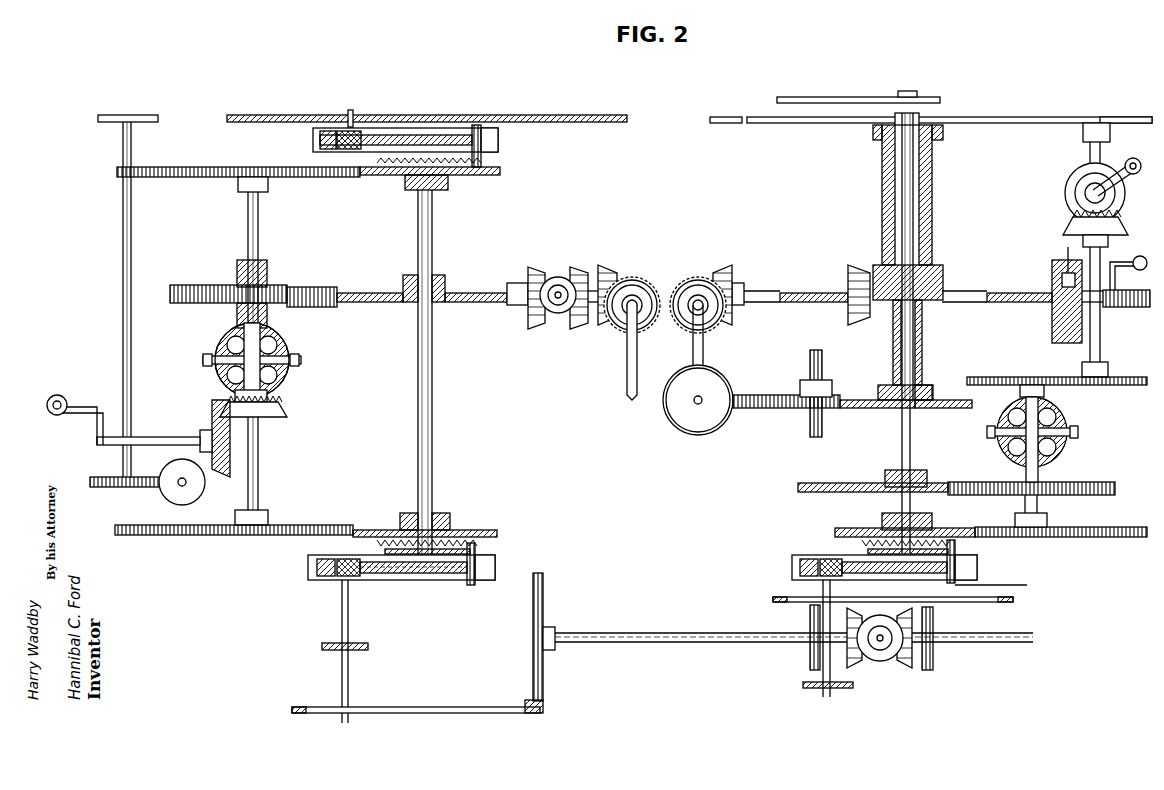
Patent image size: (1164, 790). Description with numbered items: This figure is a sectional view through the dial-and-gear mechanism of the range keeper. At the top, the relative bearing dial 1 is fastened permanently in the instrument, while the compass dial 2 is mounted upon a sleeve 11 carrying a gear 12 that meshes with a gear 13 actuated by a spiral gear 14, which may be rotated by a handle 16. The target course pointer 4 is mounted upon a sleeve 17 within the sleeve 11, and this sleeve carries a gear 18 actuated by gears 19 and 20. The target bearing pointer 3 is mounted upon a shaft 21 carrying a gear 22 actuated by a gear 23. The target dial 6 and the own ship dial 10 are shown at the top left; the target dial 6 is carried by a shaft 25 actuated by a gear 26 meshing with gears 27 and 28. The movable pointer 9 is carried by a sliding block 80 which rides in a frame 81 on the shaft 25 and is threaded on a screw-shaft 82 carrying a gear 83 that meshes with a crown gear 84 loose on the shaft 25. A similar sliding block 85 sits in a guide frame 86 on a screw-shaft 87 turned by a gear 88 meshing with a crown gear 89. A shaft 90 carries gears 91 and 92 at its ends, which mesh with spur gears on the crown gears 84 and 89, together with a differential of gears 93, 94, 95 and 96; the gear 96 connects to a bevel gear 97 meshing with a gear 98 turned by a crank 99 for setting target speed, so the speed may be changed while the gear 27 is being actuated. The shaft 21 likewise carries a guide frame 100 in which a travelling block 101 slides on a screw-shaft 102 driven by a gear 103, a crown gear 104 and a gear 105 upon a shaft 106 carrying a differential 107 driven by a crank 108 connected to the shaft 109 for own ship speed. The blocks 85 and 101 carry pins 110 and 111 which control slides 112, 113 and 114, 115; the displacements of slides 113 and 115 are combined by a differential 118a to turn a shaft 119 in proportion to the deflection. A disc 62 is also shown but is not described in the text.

The relative bearing dial 1 is at (730, 124).
The compass dial 2 is at (810, 124).
The target bearing pointer 3 is at (801, 97).
The target course pointer 4 is at (968, 116).
The target dial 6 is at (540, 114).
The movable pointer 9 is at (353, 111).
The own ship dial 10 is at (160, 115).
The sleeve 11 is at (933, 181).
The gear 12 is at (803, 303).
The gear 13 is at (1048, 290).
The spiral gear 14 is at (1054, 328).
The handle 16 is at (1141, 256).
The sleeve 17 is at (881, 222).
The gear 18 is at (946, 410).
The gear 19 is at (763, 409).
The gear 20 is at (701, 425).
The shaft 21 is at (901, 445).
The gear 22 is at (830, 492).
The gear 23 is at (1076, 482).
The shaft 25 is at (433, 241).
The gear 26 is at (378, 304).
The gear 27 is at (290, 287).
The gear 28 is at (237, 266).
The disc 62 is at (170, 500).
The sliding block 80 is at (376, 143).
The frame 81 is at (396, 128).
The screw-shaft 82 is at (438, 133).
The gear 83 is at (498, 129).
The crown gear 84 is at (482, 161).
The sliding block 85 is at (342, 552).
The guide frame 86 is at (450, 582).
The screw-shaft 87 is at (397, 576).
The gear 88 is at (474, 584).
The crown gear 89 is at (478, 542).
The shaft 90 is at (259, 212).
The gear 91 is at (189, 178).
The gear 92 is at (176, 536).
The gear 93 is at (270, 335).
The gear 94 is at (216, 371).
The gear 95 is at (290, 375).
The gear 96 is at (267, 394).
The bevel gear 97 is at (281, 410).
The gear 98 is at (221, 475).
The crank 99 is at (63, 395).
The guide frame 100 is at (978, 560).
The travelling block 101 is at (842, 559).
The screw-shaft 102 is at (793, 572).
The gear 103 is at (1018, 587).
The crown gear 104 is at (834, 537).
The gear 105 is at (1081, 537).
The shaft 106 is at (1038, 509).
The differential 107 is at (1052, 418).
The crank 108 is at (1133, 158).
The shaft 109 is at (1089, 147).
The pin 110 is at (349, 668).
The pin 111 is at (822, 675).
The slide 112 is at (321, 646).
The slide 113 is at (543, 709).
The slide 114 is at (817, 688).
The slide 115 is at (793, 602).
The differential 118a is at (907, 654).
The shaft 119 is at (1017, 644).